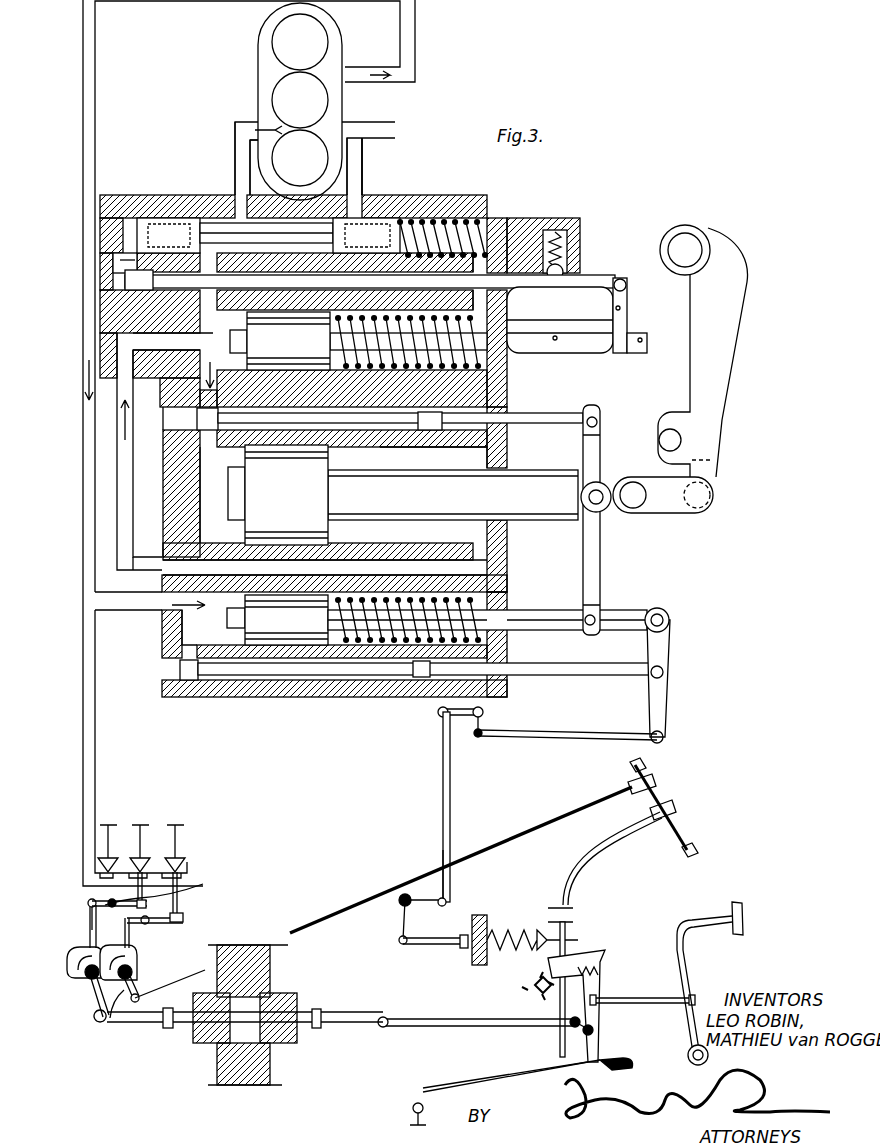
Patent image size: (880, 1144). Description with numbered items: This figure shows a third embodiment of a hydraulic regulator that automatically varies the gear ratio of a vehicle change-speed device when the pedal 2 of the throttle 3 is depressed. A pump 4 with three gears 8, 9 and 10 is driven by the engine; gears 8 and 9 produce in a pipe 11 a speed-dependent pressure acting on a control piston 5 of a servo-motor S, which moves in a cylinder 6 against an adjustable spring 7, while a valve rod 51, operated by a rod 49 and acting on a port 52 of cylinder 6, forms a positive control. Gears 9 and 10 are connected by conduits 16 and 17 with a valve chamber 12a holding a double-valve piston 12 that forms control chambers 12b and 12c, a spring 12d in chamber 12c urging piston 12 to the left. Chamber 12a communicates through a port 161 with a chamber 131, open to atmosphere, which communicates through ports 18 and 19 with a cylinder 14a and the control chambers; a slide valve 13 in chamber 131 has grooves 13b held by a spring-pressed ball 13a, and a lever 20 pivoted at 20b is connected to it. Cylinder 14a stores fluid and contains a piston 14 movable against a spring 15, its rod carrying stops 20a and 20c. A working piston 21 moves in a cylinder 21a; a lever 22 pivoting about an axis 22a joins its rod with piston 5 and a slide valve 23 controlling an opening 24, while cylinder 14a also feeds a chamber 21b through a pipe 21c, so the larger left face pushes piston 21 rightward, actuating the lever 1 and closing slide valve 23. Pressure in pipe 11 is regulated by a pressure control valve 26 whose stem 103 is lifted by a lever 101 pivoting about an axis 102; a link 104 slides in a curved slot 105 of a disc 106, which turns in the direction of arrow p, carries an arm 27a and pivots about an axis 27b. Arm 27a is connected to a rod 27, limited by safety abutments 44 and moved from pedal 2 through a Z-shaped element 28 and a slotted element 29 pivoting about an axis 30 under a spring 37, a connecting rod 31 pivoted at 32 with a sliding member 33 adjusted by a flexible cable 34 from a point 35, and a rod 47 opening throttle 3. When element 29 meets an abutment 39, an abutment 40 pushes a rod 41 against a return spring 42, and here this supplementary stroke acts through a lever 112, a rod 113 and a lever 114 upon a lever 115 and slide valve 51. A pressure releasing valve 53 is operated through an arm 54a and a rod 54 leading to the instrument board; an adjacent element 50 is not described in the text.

The lever 1 is at (697, 332).
The throttle pedal 2 is at (704, 920).
The throttle 3 is at (500, 1090).
The pump 4 is at (338, 55).
The control piston 5 is at (295, 645).
The cylinder 6 is at (445, 640).
The spring 7 is at (348, 640).
The gear 8 is at (272, 42).
The gear 9 is at (272, 90).
The gear 10 is at (272, 152).
The pipe 11 is at (100, 180).
The double-valve piston 12 is at (183, 196).
The valve chamber 12a is at (365, 195).
The control chamber 12b is at (132, 196).
The control chamber 12c is at (470, 214).
The spring 12d is at (432, 214).
The slide valve 13 is at (520, 214).
The spring-pressed ball 13a is at (572, 240).
The grooves 13b is at (565, 268).
The chamber 131 is at (157, 300).
The piston 14 is at (262, 328).
The cylinder 14a is at (170, 383).
The spring 15 is at (490, 362).
The conduit 16 is at (240, 166).
The port 161 is at (234, 196).
The conduit 17 is at (395, 130).
The port 18 is at (130, 262).
The port 19 is at (512, 195).
The lever 20 is at (621, 338).
The stop 20a is at (556, 342).
The pivot point 20b is at (623, 305).
The stop 20c is at (640, 343).
The working piston 21 is at (263, 462).
The cylinder 21a is at (213, 510).
The chamber 21b is at (478, 548).
The pipe 21c is at (133, 545).
The lever 22 is at (604, 444).
The axis 22a is at (611, 512).
The slide valve 23 is at (433, 430).
The inlet port 24 is at (200, 440).
The pressure control valve 26 is at (142, 858).
The rod 27 is at (325, 1012).
The arm 27a is at (100, 1020).
The axis 27b is at (120, 1022).
The Z-shaped element 28 is at (600, 976).
The slotted element 29 is at (612, 1000).
The axis 30 is at (596, 1035).
The connecting rod 31 is at (465, 1019).
The pivot 32 is at (386, 1018).
The sliding member 33 is at (571, 1034).
The flexible cable 34 is at (606, 826).
The operating point 35 is at (676, 812).
The spring 37 is at (600, 963).
The abutment 39 is at (536, 985).
The abutment 40 is at (571, 932).
The rod 41 is at (435, 936).
The return spring 42 is at (505, 930).
The safety abutments 44 is at (317, 1030).
The rod 47 is at (490, 1078).
The rod 49 is at (449, 858).
The funnel 50 is at (105, 858).
The valve rod 51 is at (193, 682).
The port 52 is at (185, 646).
The pressure releasing valve 53 is at (178, 858).
The rod 54 is at (658, 782).
The arm 54a is at (132, 978).
The lever 101 is at (125, 920).
The axis 102 is at (88, 906).
The valve stem 103 is at (203, 884).
The link 104 is at (92, 946).
The curved slot 105 is at (88, 998).
The disc 106 is at (118, 945).
The lever 112 is at (408, 902).
The rod 113 is at (455, 805).
The lever 114 is at (487, 740).
The lever 115 is at (660, 707).
The servo-motor S is at (492, 462).
The arrow P p is at (74, 970).